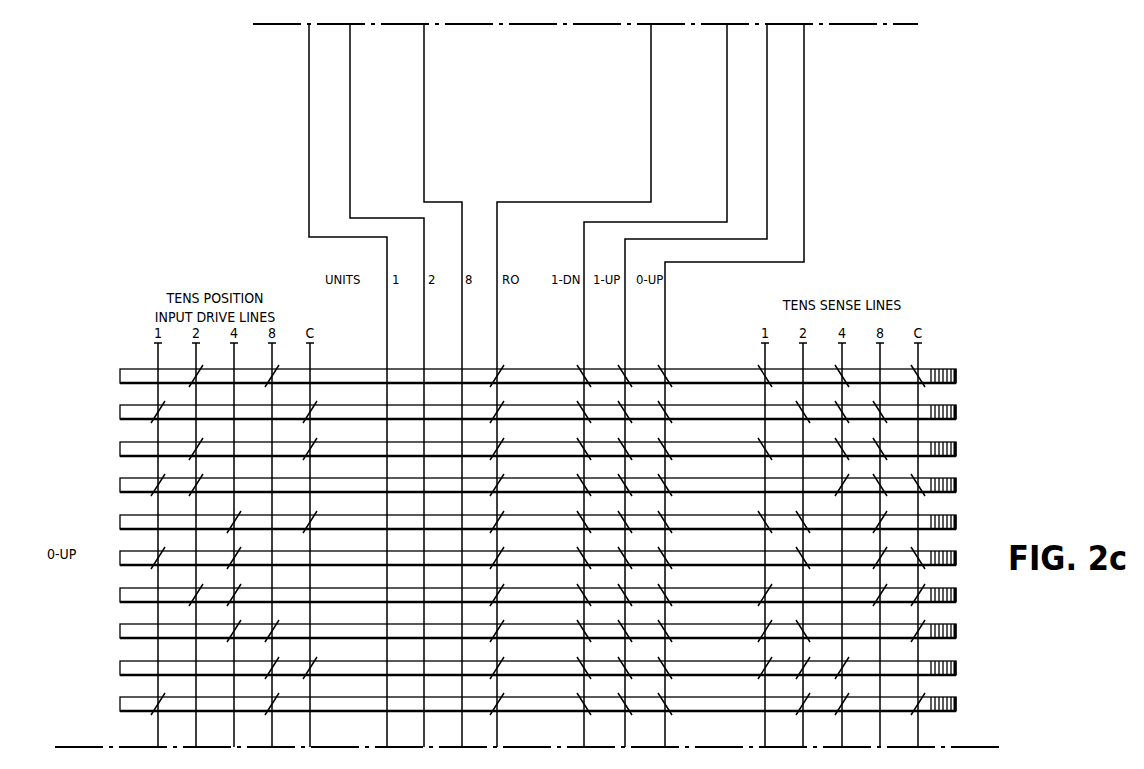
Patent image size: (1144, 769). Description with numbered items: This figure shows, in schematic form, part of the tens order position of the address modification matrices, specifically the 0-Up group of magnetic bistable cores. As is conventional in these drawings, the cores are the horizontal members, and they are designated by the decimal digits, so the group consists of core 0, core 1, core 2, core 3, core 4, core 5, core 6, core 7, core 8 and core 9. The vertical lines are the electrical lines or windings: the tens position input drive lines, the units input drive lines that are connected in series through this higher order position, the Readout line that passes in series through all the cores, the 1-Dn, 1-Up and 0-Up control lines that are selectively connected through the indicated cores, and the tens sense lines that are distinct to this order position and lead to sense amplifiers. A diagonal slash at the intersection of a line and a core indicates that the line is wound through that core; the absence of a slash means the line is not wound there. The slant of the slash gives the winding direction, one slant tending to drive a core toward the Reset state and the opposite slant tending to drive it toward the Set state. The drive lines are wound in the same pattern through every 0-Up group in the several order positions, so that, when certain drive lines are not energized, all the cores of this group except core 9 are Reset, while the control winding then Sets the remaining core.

The core 0 is at (527, 376).
The core 1 is at (527, 412).
The core 2 is at (527, 449).
The core 3 is at (527, 485).
The core 4 is at (527, 522).
The core 5 is at (527, 558).
The core 6 is at (527, 595).
The core 7 is at (527, 631).
The core 8 is at (527, 668).
The core 9 is at (527, 704).